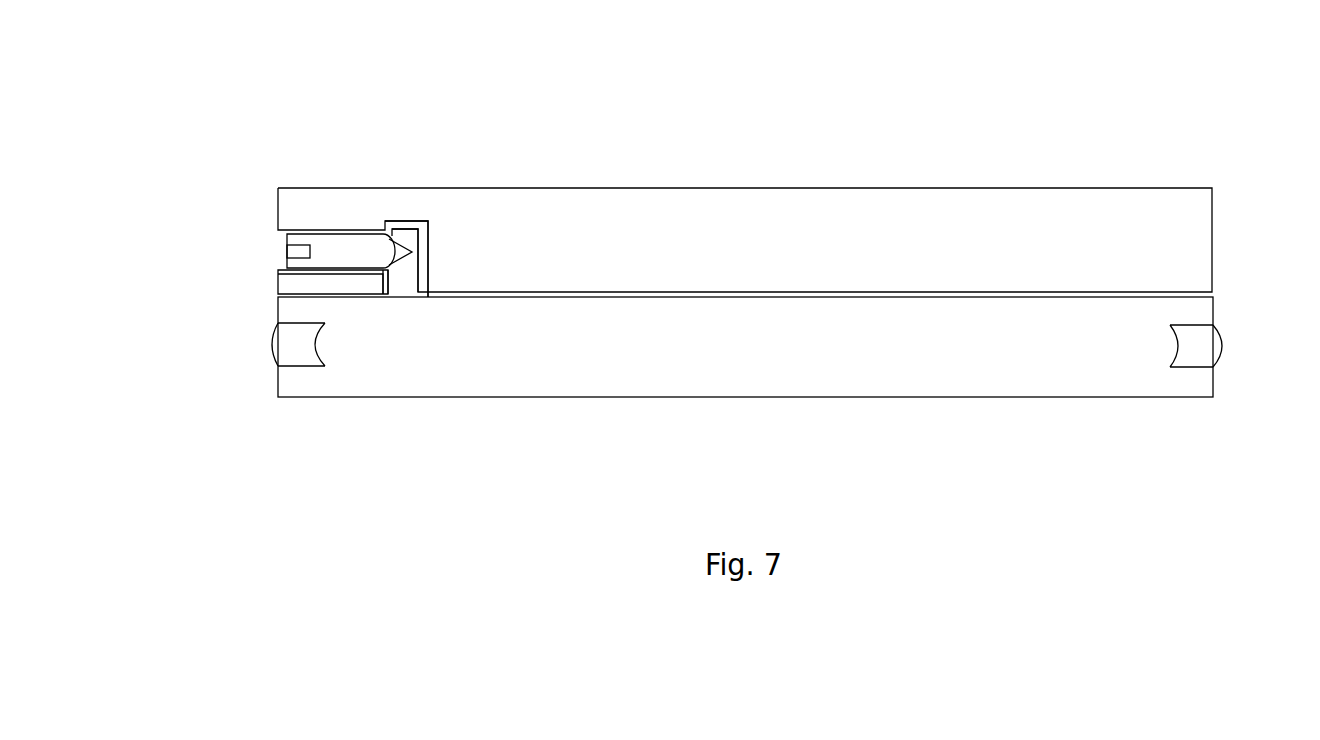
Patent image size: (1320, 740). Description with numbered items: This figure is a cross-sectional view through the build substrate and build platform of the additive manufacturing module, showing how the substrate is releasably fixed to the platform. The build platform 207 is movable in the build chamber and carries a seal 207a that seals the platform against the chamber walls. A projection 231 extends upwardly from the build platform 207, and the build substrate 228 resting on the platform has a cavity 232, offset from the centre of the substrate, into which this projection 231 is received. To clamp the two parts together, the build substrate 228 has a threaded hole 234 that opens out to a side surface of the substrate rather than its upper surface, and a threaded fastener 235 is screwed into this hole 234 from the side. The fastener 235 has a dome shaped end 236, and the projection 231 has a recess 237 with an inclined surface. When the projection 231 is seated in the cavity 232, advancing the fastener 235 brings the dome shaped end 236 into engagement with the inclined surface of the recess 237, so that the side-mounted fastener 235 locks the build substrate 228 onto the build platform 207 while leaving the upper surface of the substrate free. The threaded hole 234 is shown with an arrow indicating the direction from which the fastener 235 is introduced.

The build substrate 228 is at (792, 174).
The cavity 232 is at (438, 217).
The threaded fastener 235 is at (333, 233).
The recess 237 is at (402, 229).
The dome shaped end 236 is at (379, 273).
The projection 231 is at (408, 290).
The threaded hole 234 is at (264, 253).
The build platform 207 is at (893, 395).
The seal 207a is at (1208, 364).